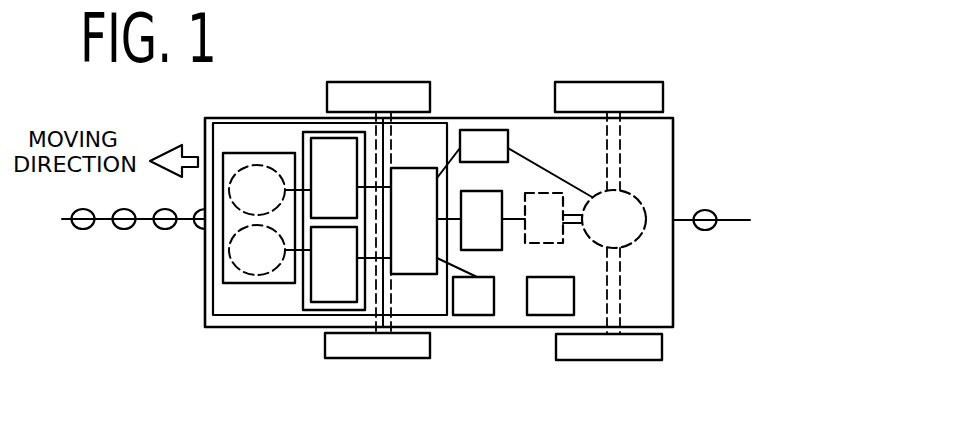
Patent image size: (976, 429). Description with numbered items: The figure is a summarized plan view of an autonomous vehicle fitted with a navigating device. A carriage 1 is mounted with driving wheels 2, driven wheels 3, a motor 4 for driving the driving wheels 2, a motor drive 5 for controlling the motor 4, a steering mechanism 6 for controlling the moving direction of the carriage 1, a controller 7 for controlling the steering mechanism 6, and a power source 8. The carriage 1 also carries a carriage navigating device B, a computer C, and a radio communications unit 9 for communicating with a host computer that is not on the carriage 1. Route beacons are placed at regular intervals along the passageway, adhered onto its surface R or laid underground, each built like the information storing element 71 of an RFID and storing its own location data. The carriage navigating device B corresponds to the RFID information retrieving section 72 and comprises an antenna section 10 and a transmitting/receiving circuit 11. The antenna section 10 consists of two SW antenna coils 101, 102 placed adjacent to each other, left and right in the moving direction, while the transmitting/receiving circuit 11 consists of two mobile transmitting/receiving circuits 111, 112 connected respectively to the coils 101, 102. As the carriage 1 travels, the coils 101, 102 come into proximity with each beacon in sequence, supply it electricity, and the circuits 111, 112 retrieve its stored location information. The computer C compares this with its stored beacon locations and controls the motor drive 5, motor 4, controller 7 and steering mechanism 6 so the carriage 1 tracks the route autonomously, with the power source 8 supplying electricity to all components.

The carriage 1 is at (673, 145).
The driving wheels 2 is at (636, 95).
The driven wheels 3 is at (395, 92).
The motor 4 is at (557, 230).
The motor drive 5 is at (493, 227).
The steering mechanism 6 is at (628, 215).
The controller 7 is at (495, 140).
The power source 8 is at (548, 305).
The radio communications unit 9 is at (475, 300).
The antenna section 10 is at (225, 286).
The transmitting/receiving circuit 11 is at (322, 307).
The SW antenna coil 101 is at (270, 175).
The SW antenna coil 102 is at (257, 263).
The mobile transmitting/receiving circuit 111 is at (318, 148).
The mobile transmitting/receiving circuit 112 is at (318, 285).
The information storing element 71 is at (745, 268).
The information retrieving section 72 is at (217, 328).
The computer C is at (410, 183).
The carriage navigating device B is at (179, 346).
The surface R is at (707, 275).